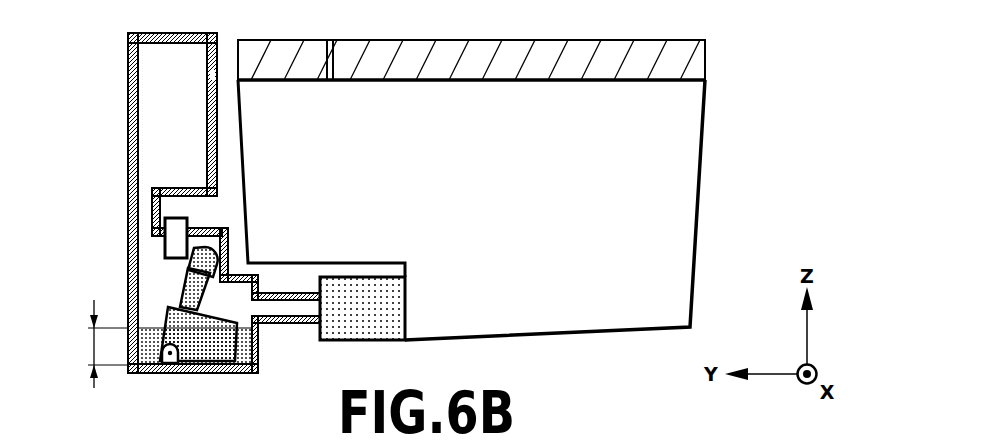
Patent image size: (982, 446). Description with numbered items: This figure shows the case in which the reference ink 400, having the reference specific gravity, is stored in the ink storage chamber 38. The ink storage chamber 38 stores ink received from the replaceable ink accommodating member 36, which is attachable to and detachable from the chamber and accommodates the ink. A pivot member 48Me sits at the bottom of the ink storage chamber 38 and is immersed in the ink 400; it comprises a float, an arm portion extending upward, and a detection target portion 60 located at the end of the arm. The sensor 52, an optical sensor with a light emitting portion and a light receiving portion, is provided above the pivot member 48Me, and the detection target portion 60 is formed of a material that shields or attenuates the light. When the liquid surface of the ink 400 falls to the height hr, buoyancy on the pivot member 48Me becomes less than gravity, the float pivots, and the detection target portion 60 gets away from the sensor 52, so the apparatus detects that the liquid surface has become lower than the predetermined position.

The ink accommodating member 36 is at (584, 34).
The ink storage chamber 38 is at (118, 70).
The sensor 52 is at (176, 218).
The detection target portion 60 is at (200, 248).
The pivot member 48Me is at (156, 290).
The ink 400 is at (248, 350).
The height hr is at (93, 344).